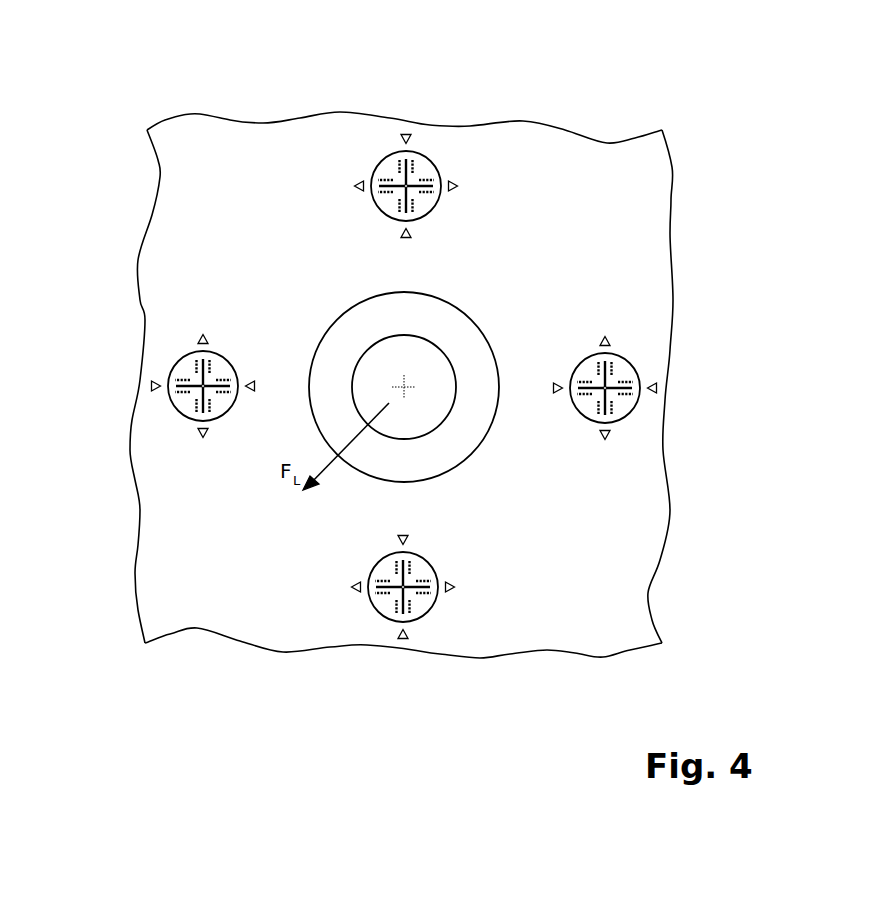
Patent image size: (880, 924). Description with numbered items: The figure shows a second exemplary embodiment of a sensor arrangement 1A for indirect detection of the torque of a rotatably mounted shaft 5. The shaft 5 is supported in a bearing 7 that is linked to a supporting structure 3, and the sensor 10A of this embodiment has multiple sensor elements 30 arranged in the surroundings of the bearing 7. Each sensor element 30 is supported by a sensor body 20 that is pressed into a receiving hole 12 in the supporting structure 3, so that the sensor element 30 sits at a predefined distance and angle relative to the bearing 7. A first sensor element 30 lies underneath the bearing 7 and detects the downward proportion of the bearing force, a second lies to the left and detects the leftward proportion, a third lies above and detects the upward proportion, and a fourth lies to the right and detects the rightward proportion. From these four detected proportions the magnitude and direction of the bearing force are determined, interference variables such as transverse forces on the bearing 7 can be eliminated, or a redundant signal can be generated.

The sensor arrangement 1A is at (404, 359).
The sensor 10A is at (420, 336).
The supporting structure 3 is at (658, 232).
The shaft 5 is at (415, 353).
The bearing 7 is at (475, 351).
The receiving hole 12 is at (429, 163).
The sensor body 20 is at (404, 386).
The sensor element 30 is at (389, 167).